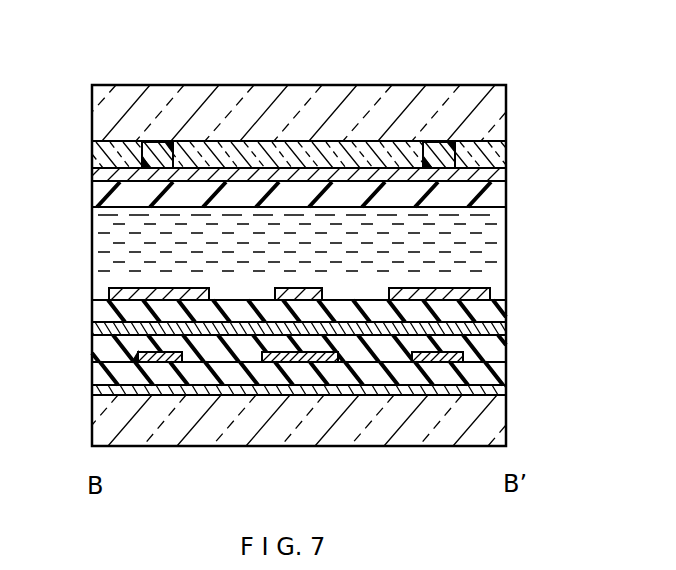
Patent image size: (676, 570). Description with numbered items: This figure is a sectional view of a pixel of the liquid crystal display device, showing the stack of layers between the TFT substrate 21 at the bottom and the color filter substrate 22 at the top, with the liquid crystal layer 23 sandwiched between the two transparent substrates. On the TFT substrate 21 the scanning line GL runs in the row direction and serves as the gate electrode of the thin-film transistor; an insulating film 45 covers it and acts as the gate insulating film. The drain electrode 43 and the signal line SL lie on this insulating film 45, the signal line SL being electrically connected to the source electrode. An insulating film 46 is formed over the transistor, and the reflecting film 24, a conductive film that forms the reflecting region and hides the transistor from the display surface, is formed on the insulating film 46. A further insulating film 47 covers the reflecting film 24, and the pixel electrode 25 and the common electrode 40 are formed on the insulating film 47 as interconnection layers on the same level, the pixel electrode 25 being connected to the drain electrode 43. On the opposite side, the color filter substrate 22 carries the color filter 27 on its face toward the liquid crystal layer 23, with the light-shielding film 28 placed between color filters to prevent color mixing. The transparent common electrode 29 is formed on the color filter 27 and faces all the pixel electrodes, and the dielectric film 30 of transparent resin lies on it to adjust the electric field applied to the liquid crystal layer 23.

The TFT substrate 21 is at (494, 432).
The color filter substrate 22 is at (500, 107).
The liquid crystal layer 23 is at (498, 235).
The reflecting film 24 is at (498, 326).
The pixel electrode 25 is at (276, 288).
The color filter 27 is at (370, 141).
The light-shielding film 28 is at (455, 147).
The common electrode 29 is at (496, 174).
The dielectric film 30 is at (498, 200).
The common electrode 40 is at (108, 293).
The drain electrode 43 is at (312, 363).
The insulating film 45 is at (498, 372).
The insulating film 46 is at (490, 348).
The insulating film 47 is at (500, 312).
The scanning line GL is at (498, 392).
The signal line SL is at (137, 353).